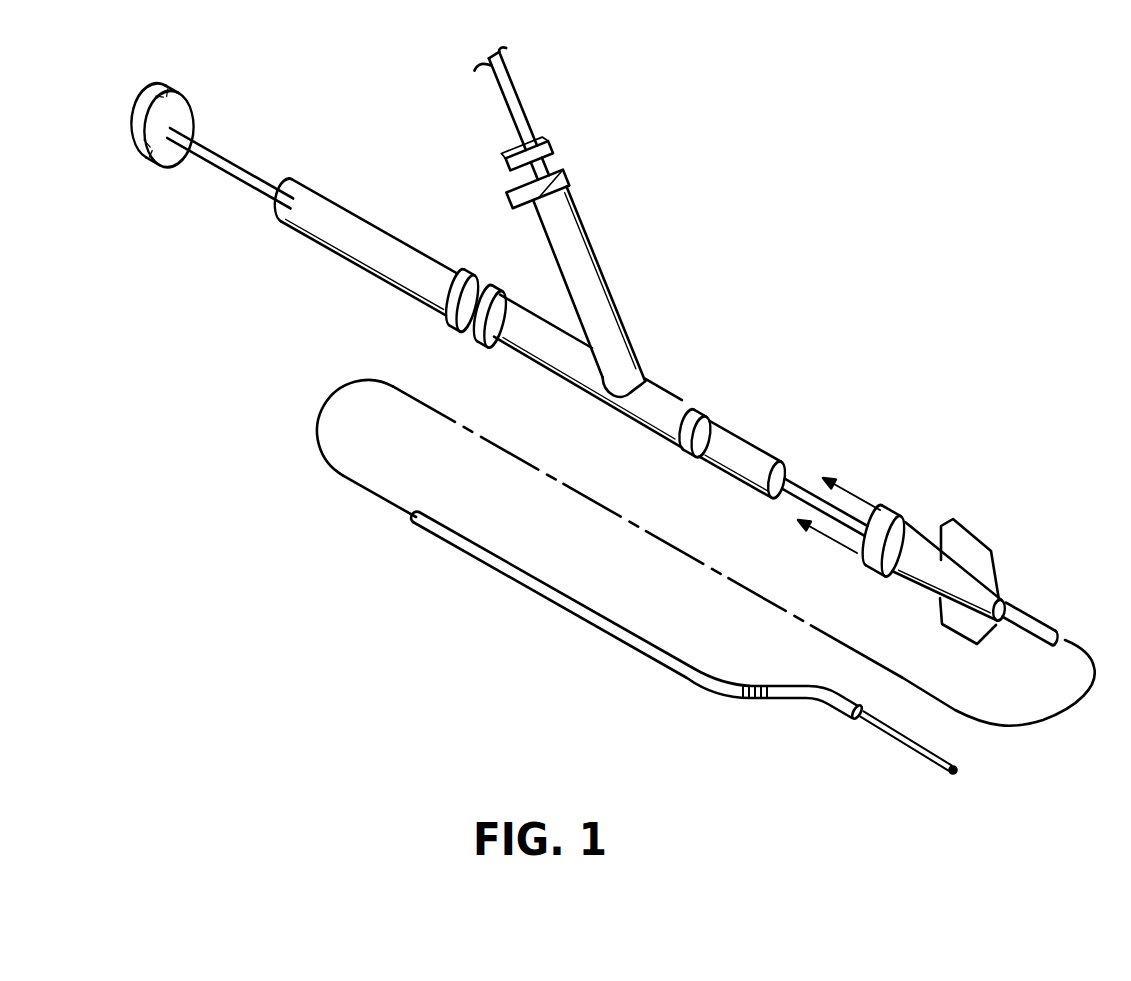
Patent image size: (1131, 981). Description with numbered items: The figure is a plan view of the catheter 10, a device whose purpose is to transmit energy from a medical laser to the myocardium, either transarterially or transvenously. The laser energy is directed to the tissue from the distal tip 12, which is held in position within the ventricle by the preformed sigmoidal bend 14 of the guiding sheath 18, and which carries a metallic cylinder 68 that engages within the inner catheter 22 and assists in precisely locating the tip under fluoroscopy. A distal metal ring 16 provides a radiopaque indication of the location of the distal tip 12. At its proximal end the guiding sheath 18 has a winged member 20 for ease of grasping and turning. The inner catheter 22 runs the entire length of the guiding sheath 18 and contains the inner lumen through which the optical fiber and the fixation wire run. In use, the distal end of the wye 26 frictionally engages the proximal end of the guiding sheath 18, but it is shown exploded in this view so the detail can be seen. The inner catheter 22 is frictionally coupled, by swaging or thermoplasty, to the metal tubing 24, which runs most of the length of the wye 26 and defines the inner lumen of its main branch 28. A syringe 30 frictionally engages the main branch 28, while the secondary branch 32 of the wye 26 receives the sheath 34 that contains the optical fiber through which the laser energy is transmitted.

The catheter 10 is at (926, 277).
The distal tip 12 is at (895, 781).
The preformed sigmoidal bend 14 is at (706, 553).
The distal metal ring 16 is at (778, 717).
The guiding sheath 18 is at (1058, 609).
The winged member 20 is at (948, 571).
The inner catheter 22 is at (905, 740).
The metal tubing 24 is at (790, 484).
The wye 26 is at (701, 410).
The main branch 28 is at (571, 371).
The syringe 30 is at (317, 212).
The secondary branch 32 is at (573, 271).
The sheath 34 is at (525, 101).
The metallic cylinder 68 is at (982, 763).